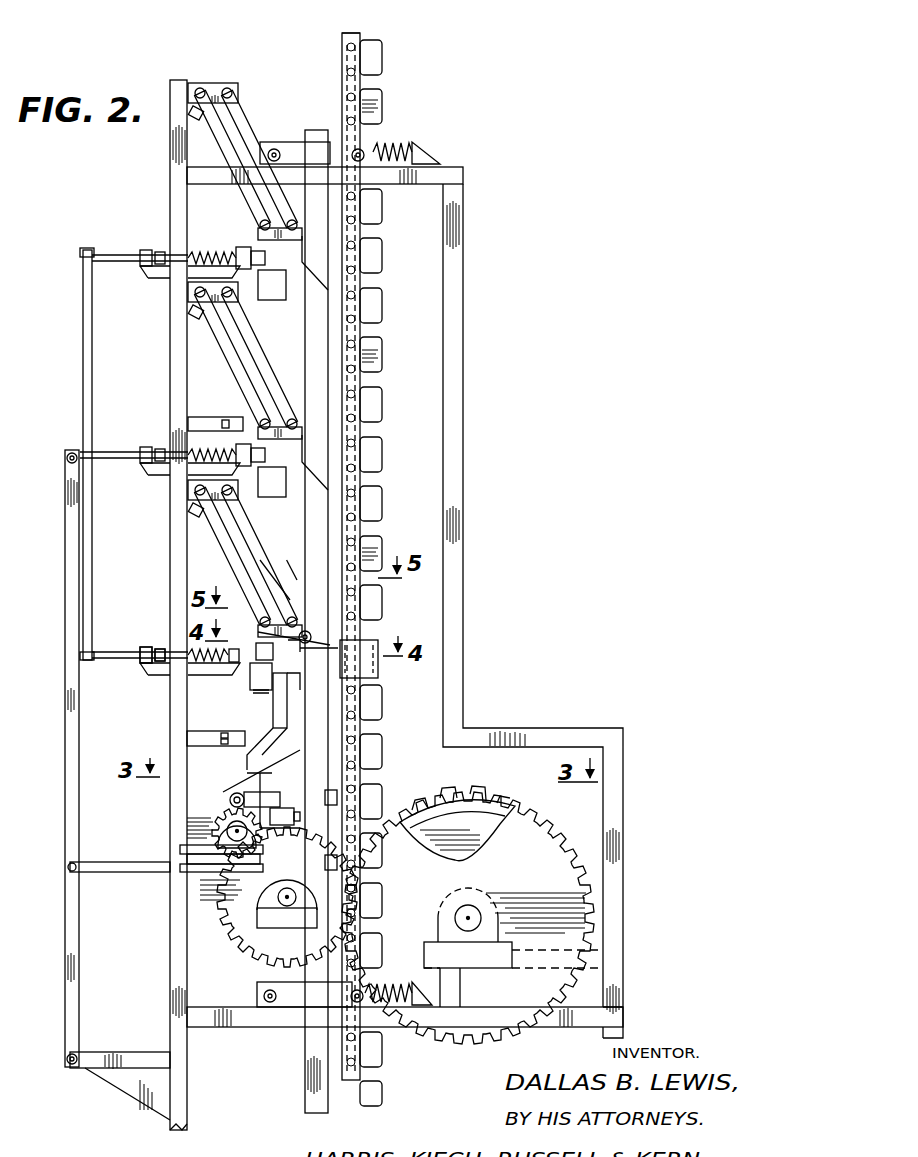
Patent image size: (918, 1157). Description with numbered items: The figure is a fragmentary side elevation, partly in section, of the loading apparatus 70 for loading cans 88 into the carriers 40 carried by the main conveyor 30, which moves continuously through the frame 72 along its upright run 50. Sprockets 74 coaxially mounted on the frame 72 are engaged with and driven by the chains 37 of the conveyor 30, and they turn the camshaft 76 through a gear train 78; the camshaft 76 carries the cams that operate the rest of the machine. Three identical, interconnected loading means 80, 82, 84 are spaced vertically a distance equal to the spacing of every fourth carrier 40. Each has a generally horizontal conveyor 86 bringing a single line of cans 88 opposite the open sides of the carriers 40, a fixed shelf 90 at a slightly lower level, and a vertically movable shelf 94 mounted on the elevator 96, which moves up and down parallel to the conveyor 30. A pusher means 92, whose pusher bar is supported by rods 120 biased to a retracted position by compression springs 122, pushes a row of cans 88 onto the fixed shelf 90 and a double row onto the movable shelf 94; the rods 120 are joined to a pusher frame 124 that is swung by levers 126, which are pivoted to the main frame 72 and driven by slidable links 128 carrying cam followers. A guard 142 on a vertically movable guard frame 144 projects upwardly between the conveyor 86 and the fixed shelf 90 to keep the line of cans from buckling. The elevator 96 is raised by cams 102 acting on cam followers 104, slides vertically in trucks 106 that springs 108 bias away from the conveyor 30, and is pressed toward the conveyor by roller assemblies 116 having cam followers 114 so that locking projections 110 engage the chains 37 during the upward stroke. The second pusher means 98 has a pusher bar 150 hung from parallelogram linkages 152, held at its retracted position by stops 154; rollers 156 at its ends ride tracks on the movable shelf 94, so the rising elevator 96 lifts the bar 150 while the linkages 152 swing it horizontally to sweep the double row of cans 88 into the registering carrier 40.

The conveyor 30 is at (355, 32).
The chains 37 is at (356, 61).
The carriers 40 is at (381, 113).
The upright run 50 is at (383, 37).
The loading apparatus 70 is at (222, 60).
The frame 72 is at (466, 418).
The sprockets 74 is at (470, 820).
The camshaft 76 is at (217, 830).
The gear train 78 is at (446, 1054).
The loading means 80 is at (88, 677).
The loading means 82 is at (112, 483).
The loading means 84 is at (120, 289).
The horizontal conveyor 86 is at (255, 680).
The cans 88 is at (292, 640).
The fixed shelf 90 is at (315, 700).
The pusher means 92 is at (236, 660).
The movable shelf 94 is at (378, 660).
The elevator 96 is at (322, 352).
The pusher means 98 is at (304, 630).
The cams 102 is at (250, 876).
The cam followers 104 is at (230, 798).
The trucks 106 is at (288, 144).
The springs 108 is at (400, 146).
The locking projections 110 is at (345, 809).
The cam followers 114 is at (272, 790).
The roller assemblies 116 is at (284, 802).
The rods 120 is at (150, 662).
The compression springs 122 is at (180, 650).
The pusher frame 124 is at (86, 405).
The levers 126 is at (62, 632).
The links 128 is at (111, 873).
The guard 142 is at (273, 700).
The guard frame 144 is at (232, 588).
The pusher bar 150 is at (318, 632).
The parallelogram linkages 152 is at (300, 562).
The stops 154 is at (192, 514).
The rollers 156 is at (332, 641).